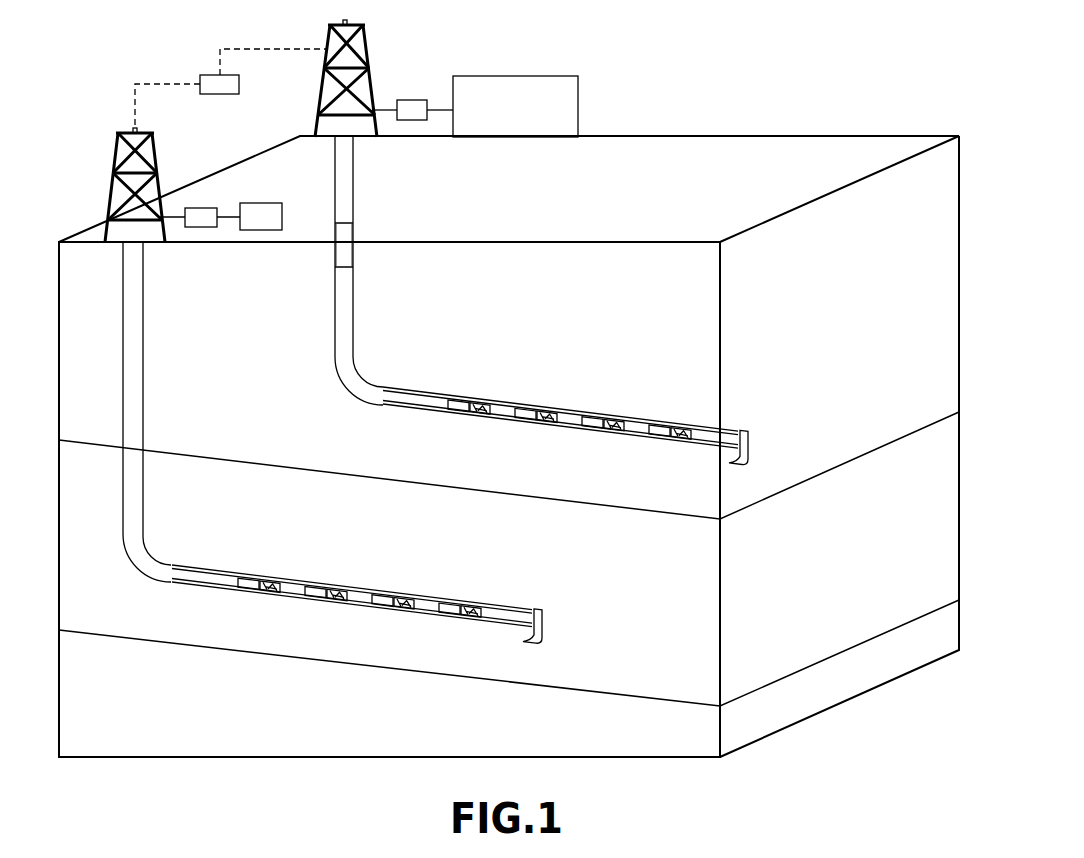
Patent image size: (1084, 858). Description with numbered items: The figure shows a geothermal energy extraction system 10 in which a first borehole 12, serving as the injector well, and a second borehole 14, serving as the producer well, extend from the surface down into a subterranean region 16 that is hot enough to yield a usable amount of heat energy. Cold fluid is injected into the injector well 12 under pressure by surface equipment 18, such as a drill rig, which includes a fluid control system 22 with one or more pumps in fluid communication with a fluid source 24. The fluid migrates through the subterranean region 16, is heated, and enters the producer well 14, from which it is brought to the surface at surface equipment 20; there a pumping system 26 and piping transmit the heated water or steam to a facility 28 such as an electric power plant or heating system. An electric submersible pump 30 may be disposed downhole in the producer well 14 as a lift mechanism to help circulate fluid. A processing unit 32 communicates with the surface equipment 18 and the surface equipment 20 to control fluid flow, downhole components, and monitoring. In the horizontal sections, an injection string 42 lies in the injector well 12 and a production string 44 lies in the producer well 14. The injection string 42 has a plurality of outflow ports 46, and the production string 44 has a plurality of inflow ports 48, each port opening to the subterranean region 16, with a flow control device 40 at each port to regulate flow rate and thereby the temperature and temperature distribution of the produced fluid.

The geothermal energy extraction system 10 is at (732, 103).
The first borehole 12 is at (133, 375).
The second borehole 14 is at (347, 302).
The subterranean region 16 is at (552, 531).
The surface equipment 18 is at (112, 166).
The surface equipment 20 is at (370, 50).
The fluid control system 22 is at (200, 207).
The fluid source 24 is at (282, 217).
The pumping system 26 is at (410, 100).
The facility 28 is at (515, 88).
The electric submersible pump 30 is at (345, 252).
The processing unit 32 is at (213, 78).
The flow control device 40 is at (462, 400).
The injection string 42 is at (197, 565).
The production string 44 is at (408, 392).
The outflow port 46 is at (270, 591).
The inflow port 48 is at (480, 413).